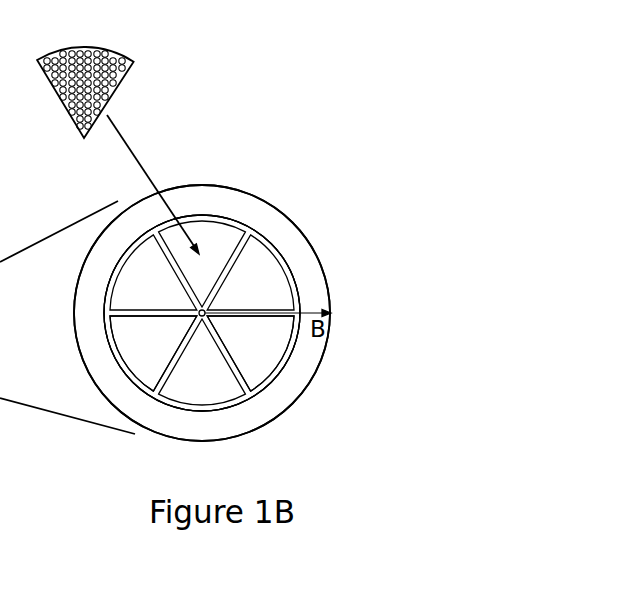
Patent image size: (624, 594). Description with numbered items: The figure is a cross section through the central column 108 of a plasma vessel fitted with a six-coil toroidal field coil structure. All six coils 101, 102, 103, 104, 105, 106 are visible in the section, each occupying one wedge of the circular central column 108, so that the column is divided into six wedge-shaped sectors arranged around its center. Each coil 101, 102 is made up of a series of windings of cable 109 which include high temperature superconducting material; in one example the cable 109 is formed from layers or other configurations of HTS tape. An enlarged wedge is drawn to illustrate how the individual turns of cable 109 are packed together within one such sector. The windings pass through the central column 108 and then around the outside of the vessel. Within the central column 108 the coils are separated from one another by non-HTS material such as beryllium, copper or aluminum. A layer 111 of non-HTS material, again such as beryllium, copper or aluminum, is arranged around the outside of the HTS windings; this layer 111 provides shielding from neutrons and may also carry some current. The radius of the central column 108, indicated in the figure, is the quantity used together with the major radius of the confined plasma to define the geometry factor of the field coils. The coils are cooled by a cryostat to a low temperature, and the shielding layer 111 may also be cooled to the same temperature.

The coil 101 is at (112, 349).
The coil 102 is at (106, 298).
The coil 103 is at (223, 222).
The coil 104 is at (280, 252).
The coil 105 is at (267, 380).
The coil 106 is at (178, 410).
The central column 108 is at (315, 376).
The cable 109 is at (119, 53).
The layer of non-HTS material 111 is at (325, 272).